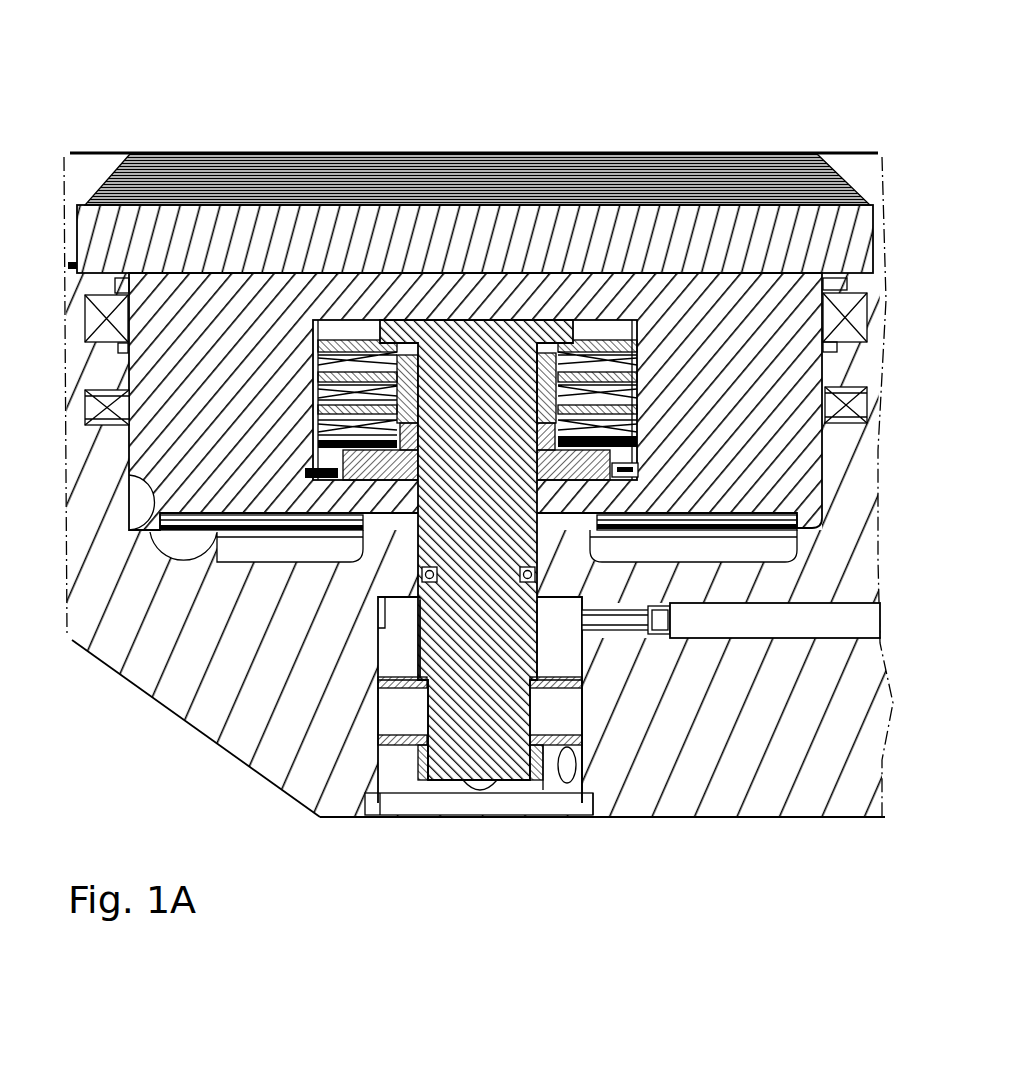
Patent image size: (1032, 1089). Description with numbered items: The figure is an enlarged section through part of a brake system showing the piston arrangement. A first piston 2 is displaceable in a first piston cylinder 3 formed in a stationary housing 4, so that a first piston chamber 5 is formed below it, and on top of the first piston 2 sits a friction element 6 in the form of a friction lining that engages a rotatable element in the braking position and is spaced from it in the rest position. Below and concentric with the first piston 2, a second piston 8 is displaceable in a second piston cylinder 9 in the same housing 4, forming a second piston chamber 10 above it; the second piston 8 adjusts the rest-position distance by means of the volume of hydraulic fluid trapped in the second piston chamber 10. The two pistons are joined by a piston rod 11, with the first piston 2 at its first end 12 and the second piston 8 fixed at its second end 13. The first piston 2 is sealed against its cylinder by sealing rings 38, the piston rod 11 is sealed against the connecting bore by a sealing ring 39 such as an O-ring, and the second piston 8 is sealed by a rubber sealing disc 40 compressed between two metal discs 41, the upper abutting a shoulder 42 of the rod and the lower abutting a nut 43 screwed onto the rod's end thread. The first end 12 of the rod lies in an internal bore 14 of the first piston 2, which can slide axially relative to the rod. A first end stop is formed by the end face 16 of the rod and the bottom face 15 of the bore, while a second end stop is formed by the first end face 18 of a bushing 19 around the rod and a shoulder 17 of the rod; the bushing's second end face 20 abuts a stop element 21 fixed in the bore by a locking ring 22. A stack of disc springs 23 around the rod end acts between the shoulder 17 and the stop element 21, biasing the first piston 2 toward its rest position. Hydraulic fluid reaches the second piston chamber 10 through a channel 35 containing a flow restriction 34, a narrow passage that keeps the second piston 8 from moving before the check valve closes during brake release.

The first piston 2 is at (272, 325).
The first piston cylinder 3 is at (145, 530).
The stationary housing 4 is at (858, 763).
The first piston chamber 5 is at (178, 545).
The friction element 6 is at (138, 184).
The second piston 8 is at (377, 722).
The second piston cylinder 9 is at (382, 632).
The second piston chamber 10 is at (570, 638).
The piston rod 11 is at (453, 615).
The first end 12 is at (478, 368).
The second end 13 is at (463, 781).
The internal bore 14 is at (420, 492).
The bottom face 15 is at (639, 357).
The end face 16 is at (476, 322).
The shoulder 17 is at (537, 370).
The first end face 18 is at (405, 328).
The bushing 19 is at (316, 395).
The second end face 20 is at (420, 462).
The stop element 21 is at (640, 455).
The locking ring 22 is at (303, 471).
The disc springs 23 is at (318, 370).
The flow restriction 34 is at (632, 627).
The channel 35 is at (758, 623).
The sealing rings 38 is at (853, 313).
The sealing ring 39 is at (535, 573).
The rubber sealing disc 40 is at (377, 705).
The metal discs 41 is at (377, 687).
The shoulder 42 is at (540, 688).
The nut 43 is at (540, 782).